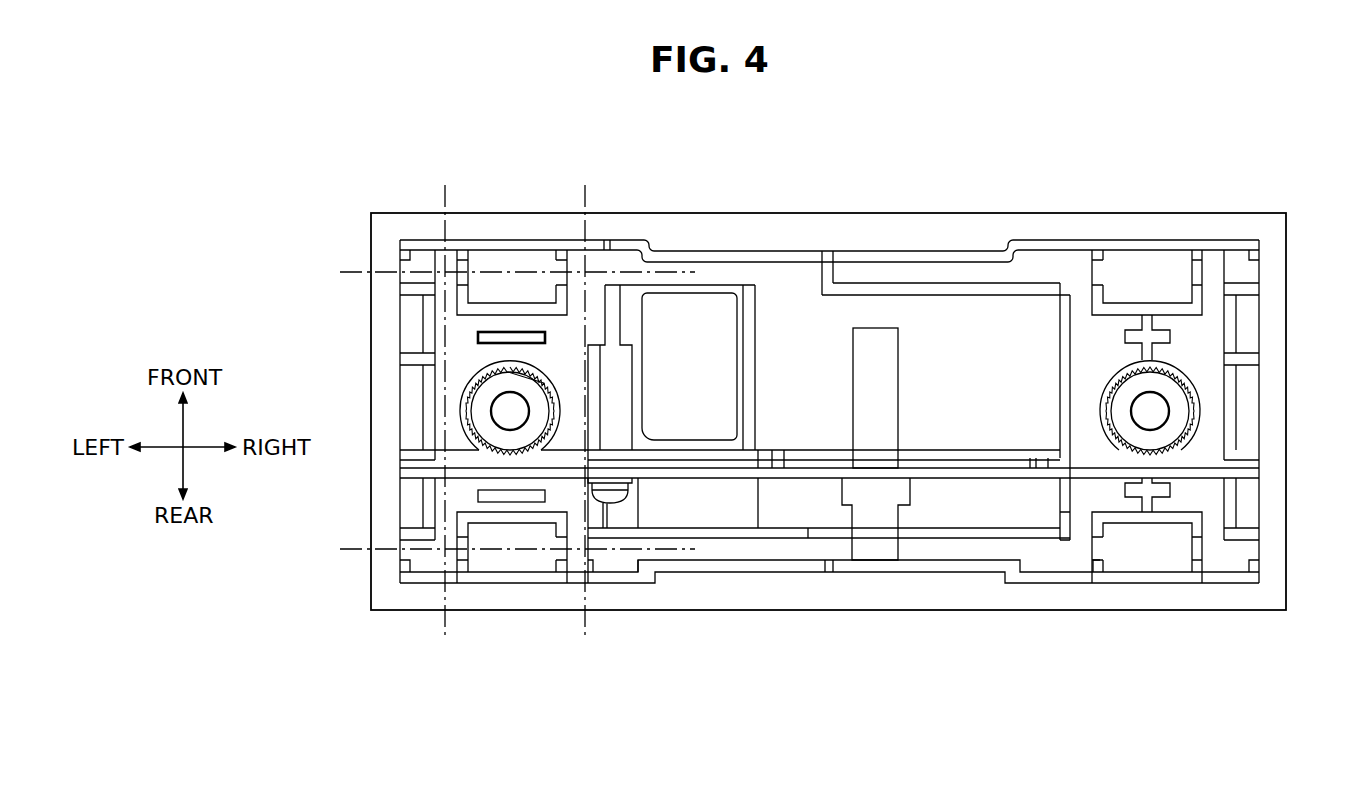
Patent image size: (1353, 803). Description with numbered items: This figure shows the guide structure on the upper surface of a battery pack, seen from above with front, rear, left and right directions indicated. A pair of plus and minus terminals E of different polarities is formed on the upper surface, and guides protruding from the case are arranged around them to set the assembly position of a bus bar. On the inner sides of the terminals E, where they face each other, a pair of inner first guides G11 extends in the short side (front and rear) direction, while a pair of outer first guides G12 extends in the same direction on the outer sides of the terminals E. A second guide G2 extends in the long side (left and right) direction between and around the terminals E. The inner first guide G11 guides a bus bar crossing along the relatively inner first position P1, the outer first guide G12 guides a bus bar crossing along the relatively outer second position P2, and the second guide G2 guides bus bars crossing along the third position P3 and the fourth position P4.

The outer first guide G12 is at (460, 300).
The second guide G2 is at (527, 307).
The inner first guide G11 is at (597, 350).
The first position P1 is at (583, 398).
The second position P2 is at (446, 398).
The third position P3 is at (506, 274).
The fourth position P4 is at (506, 550).
The terminal E is at (1198, 405).